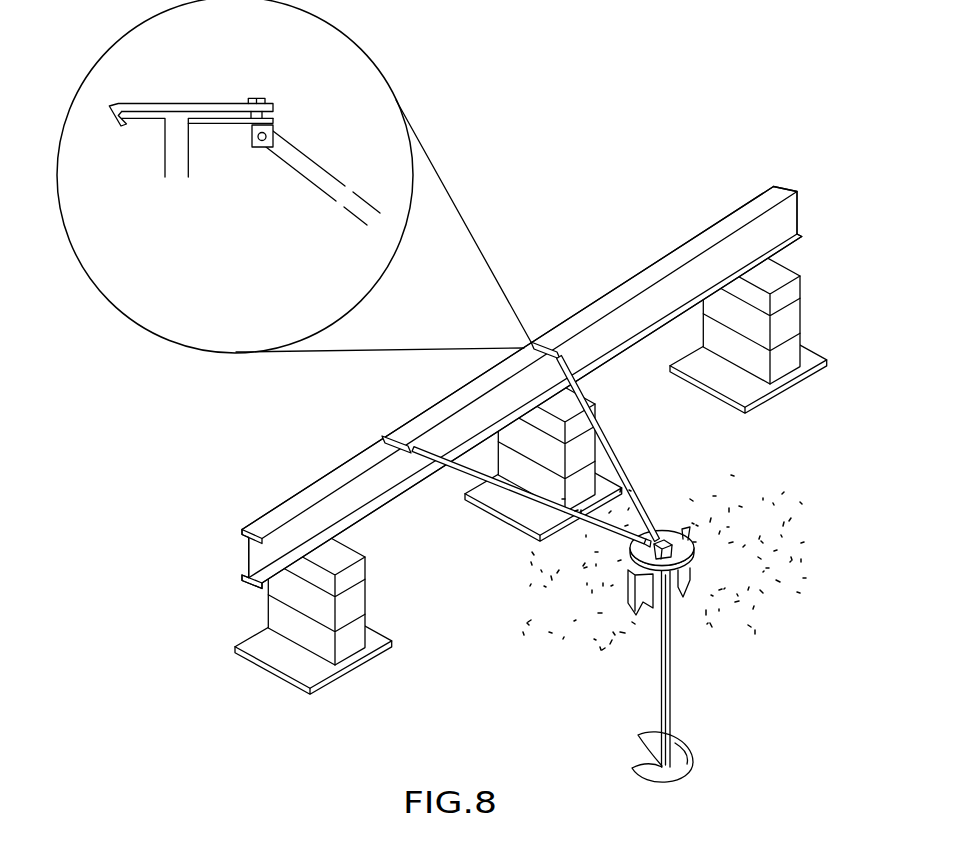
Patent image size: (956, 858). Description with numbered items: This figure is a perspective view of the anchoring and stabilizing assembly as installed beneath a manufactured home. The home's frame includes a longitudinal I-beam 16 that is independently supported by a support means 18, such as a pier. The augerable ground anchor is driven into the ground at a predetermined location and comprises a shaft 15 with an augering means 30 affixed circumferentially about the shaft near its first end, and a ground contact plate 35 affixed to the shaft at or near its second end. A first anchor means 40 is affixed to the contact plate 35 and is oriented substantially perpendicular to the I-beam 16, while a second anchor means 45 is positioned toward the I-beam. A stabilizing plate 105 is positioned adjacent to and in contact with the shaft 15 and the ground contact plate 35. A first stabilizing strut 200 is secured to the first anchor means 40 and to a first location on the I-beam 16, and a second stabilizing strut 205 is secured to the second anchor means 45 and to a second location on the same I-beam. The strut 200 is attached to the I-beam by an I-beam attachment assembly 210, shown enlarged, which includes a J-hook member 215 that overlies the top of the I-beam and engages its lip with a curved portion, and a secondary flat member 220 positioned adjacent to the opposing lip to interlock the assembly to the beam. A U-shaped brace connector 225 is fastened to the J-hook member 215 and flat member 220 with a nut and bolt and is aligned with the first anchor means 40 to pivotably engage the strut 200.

The shaft 15 is at (670, 650).
The I-beam 16 is at (711, 284).
The support means 18 is at (792, 325).
The augering means 30 is at (678, 752).
The ground contact plate 35 is at (694, 558).
The first anchor means 40 is at (670, 535).
The second anchor means 45 is at (630, 565).
The stabilizing plate 105 is at (627, 596).
The first stabilizing strut 200 is at (609, 437).
The second stabilizing strut 205 is at (552, 517).
The I-beam attachment assembly 210 is at (249, 91).
The J-hook member 215 is at (123, 102).
The secondary flat member 220 is at (219, 124).
The U-shaped brace connector 225 is at (273, 128).